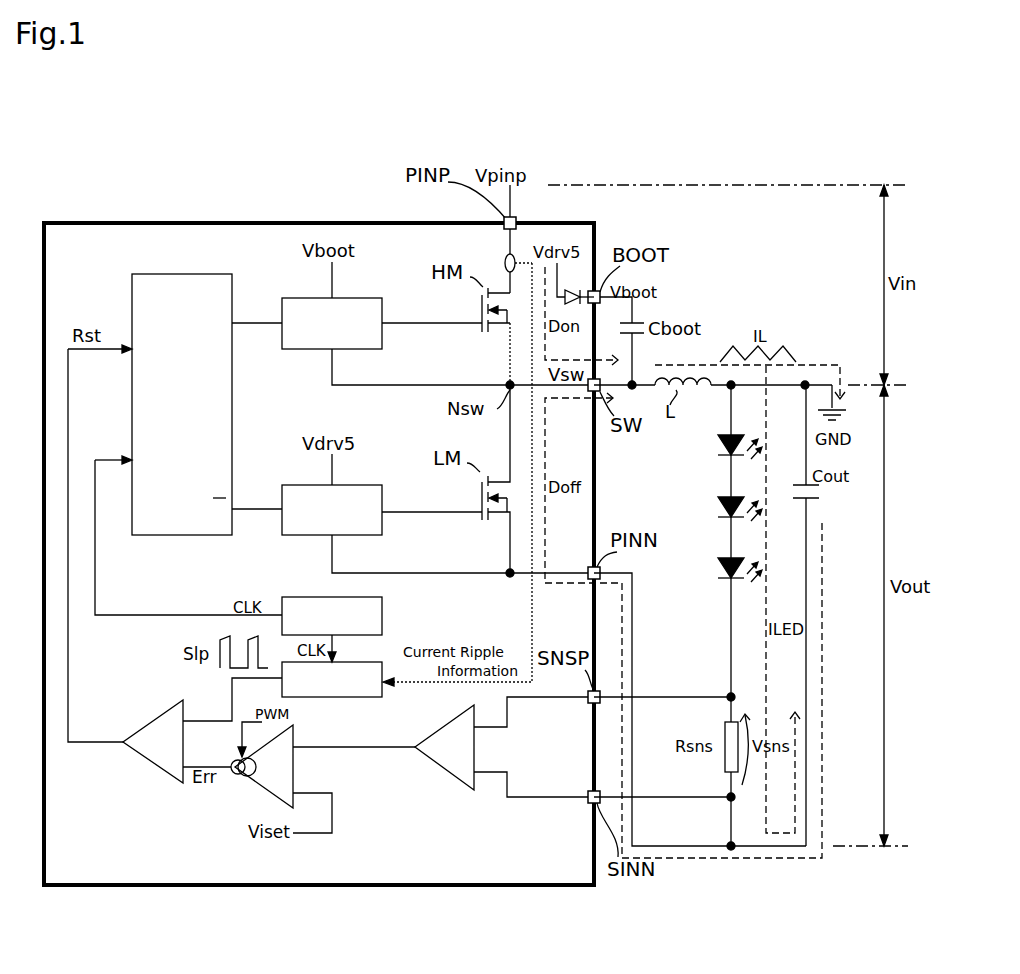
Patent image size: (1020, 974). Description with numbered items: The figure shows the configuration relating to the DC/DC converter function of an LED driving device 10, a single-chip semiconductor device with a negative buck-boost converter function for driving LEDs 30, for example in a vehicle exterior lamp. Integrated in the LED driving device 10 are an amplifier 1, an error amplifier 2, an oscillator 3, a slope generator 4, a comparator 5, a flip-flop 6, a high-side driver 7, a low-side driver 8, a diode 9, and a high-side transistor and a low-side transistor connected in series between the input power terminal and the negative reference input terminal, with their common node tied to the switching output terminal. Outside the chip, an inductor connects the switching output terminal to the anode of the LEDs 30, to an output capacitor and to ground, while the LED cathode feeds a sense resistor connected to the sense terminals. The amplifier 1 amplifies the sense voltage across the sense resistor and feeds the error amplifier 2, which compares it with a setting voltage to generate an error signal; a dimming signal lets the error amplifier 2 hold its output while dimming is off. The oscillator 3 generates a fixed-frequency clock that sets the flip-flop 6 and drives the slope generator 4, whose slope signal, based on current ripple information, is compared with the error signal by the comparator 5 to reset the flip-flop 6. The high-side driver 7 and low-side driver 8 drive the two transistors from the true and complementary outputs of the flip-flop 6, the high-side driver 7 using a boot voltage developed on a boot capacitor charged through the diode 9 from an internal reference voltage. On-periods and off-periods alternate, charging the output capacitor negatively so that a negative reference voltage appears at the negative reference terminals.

The amplifier 1 is at (437, 730).
The error amplifier 2 is at (297, 730).
The oscillator 3 is at (382, 601).
The slope generator 4 is at (383, 662).
The comparator 5 is at (166, 712).
The flip-flop 6 is at (220, 274).
The high-side driver 7 is at (372, 298).
The low-side driver 8 is at (372, 485).
The diode 9 is at (576, 289).
The LED driving device 10 is at (583, 222).
The LEDs 30 is at (719, 497).